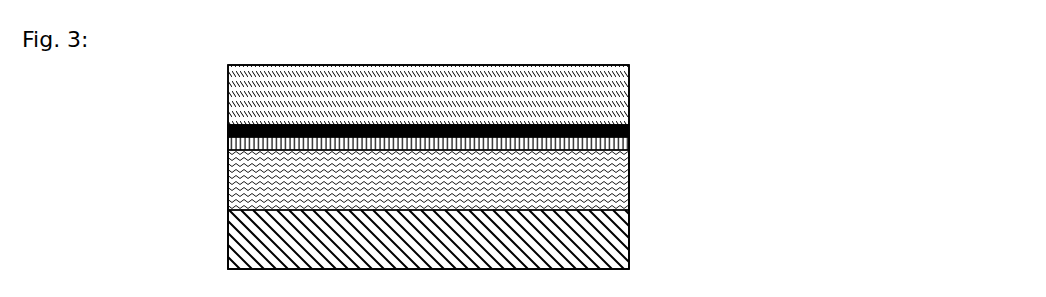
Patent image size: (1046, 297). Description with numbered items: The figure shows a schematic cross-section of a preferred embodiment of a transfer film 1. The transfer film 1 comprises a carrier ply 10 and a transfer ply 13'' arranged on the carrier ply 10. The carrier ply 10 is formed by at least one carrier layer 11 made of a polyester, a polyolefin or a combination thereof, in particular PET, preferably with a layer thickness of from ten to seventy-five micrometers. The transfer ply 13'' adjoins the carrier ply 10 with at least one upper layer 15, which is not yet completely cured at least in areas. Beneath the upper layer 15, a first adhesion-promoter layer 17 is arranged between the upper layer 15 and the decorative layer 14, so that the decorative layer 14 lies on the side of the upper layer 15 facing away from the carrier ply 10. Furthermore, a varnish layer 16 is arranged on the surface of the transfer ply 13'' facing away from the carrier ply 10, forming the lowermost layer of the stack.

The transfer film 1 is at (645, 48).
The carrier ply 10 is at (222, 95).
The carrier layer 11 is at (612, 88).
The transfer ply 13'' is at (375, 197).
The decorative layer 14 is at (612, 183).
The upper layer 15 is at (612, 134).
The varnish layer 16 is at (612, 240).
The first adhesion-promoter layer 17 is at (612, 146).